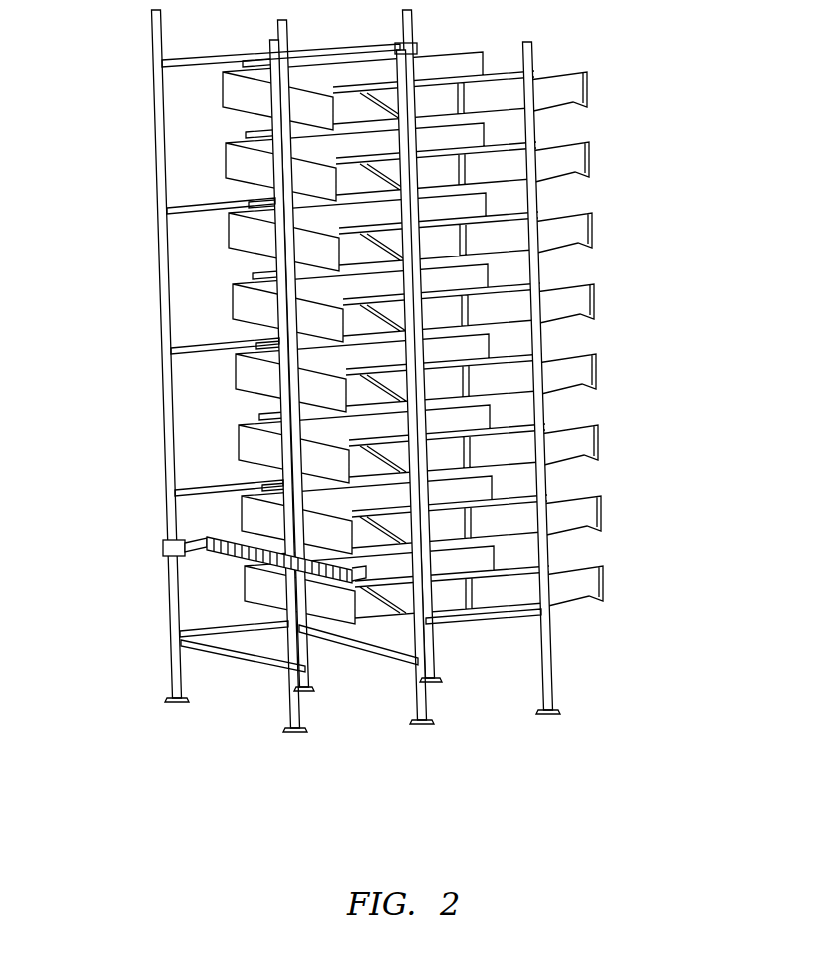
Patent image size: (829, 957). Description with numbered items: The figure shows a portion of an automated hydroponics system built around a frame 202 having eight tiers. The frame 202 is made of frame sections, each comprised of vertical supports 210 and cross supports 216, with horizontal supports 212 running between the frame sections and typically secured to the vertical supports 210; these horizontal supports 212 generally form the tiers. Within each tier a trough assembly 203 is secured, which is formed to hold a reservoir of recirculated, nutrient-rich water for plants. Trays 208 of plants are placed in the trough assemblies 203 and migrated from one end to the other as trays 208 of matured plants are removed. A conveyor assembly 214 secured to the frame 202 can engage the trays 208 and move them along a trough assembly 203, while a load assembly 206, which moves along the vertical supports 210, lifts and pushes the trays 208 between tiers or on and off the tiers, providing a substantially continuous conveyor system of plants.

The frame 202 is at (469, 378).
The trough assembly 203 is at (597, 128).
The load assembly 206 is at (211, 513).
The tray 208 is at (212, 530).
The vertical support 210 is at (544, 268).
The horizontal support 212 is at (498, 343).
The conveyor assembly 214 is at (244, 416).
The cross support 216 is at (361, 678).